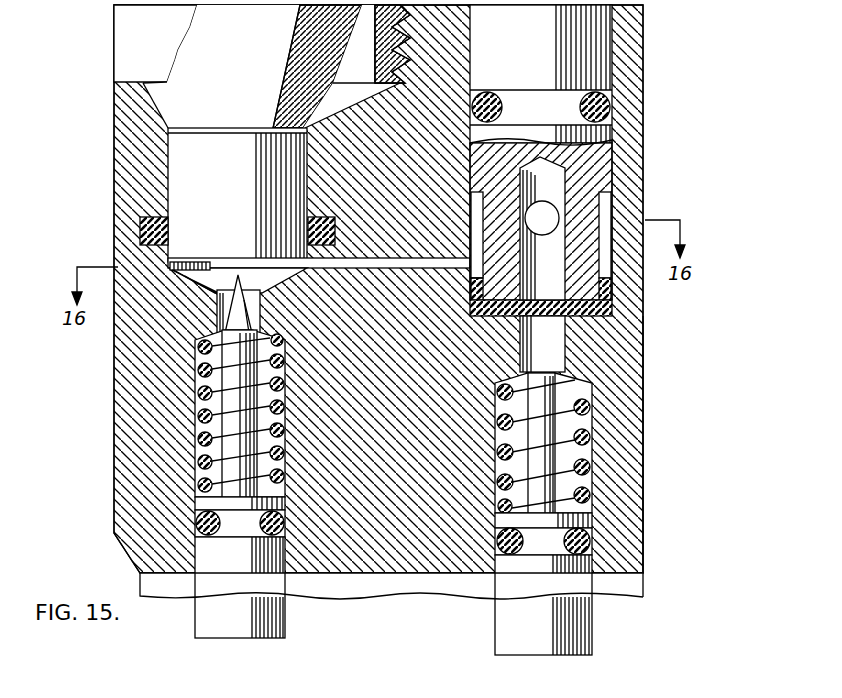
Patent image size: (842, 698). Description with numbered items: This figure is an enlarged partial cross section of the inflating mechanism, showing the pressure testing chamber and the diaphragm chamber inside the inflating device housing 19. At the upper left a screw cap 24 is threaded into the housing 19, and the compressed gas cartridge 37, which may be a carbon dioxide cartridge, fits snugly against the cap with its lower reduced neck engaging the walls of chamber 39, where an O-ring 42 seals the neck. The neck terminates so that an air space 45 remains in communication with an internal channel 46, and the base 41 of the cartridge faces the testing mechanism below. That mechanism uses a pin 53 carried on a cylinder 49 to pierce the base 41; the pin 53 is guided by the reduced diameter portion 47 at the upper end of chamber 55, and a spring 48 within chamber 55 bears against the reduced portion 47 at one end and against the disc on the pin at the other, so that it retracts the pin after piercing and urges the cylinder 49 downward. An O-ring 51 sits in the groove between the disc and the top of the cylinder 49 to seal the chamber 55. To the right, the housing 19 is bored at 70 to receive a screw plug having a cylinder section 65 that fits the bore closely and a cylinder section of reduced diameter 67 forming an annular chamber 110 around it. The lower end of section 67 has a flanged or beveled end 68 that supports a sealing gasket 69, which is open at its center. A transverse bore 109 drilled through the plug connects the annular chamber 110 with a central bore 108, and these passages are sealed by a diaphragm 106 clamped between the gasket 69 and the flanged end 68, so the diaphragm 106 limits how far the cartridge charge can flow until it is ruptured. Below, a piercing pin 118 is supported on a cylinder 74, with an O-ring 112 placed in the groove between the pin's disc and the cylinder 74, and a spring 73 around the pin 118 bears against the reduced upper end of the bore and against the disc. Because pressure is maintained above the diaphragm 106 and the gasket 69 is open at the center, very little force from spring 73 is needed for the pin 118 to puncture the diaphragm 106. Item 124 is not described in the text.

The inflating device housing 19 is at (645, 135).
The screw cap 24 is at (130, 43).
The compressed gas cartridge 37 is at (272, 66).
The chamber 39 is at (170, 152).
The base 41 is at (255, 250).
The O-ring 42 is at (142, 230).
The air space 45 is at (213, 272).
The internal channel 46 is at (432, 262).
The reduced diameter portion 47 is at (250, 304).
The spring 48 is at (212, 413).
The cylinder 49 is at (285, 610).
The O-ring 51 is at (196, 522).
The pin 53 is at (236, 432).
The chamber 55 is at (197, 407).
The cylinder section 65 is at (606, 111).
The cylinder section of reduced diameter 67 is at (604, 219).
The flanged or beveled end 68 is at (475, 300).
The sealing gasket 69 is at (645, 337).
The bore 70 is at (643, 47).
The spring 73 is at (584, 478).
The cylinder 74 is at (582, 633).
The diaphragm 106 is at (600, 292).
The central bore 108 is at (610, 264).
The transverse bore 109 is at (553, 220).
The annular chamber 110 is at (608, 212).
The O-ring 112 is at (584, 546).
The piercing pin 118 is at (596, 443).
The spring 124 is at (584, 448).